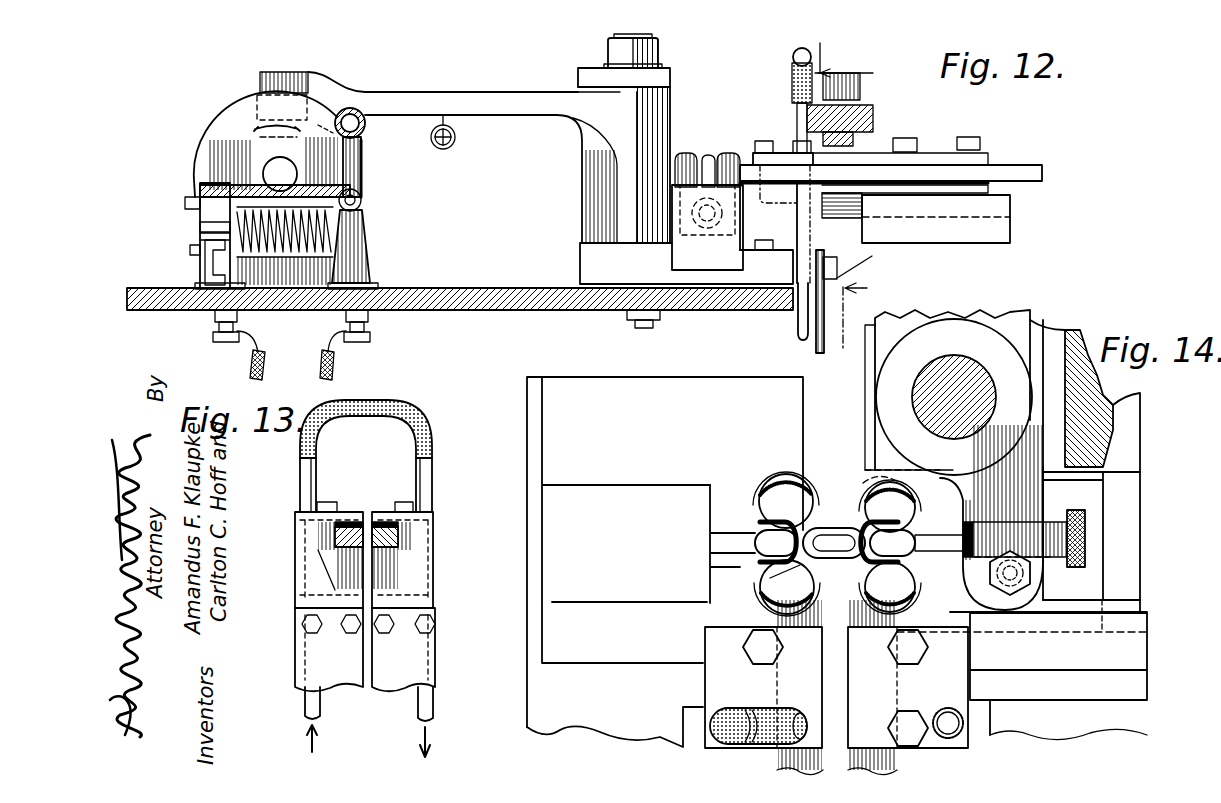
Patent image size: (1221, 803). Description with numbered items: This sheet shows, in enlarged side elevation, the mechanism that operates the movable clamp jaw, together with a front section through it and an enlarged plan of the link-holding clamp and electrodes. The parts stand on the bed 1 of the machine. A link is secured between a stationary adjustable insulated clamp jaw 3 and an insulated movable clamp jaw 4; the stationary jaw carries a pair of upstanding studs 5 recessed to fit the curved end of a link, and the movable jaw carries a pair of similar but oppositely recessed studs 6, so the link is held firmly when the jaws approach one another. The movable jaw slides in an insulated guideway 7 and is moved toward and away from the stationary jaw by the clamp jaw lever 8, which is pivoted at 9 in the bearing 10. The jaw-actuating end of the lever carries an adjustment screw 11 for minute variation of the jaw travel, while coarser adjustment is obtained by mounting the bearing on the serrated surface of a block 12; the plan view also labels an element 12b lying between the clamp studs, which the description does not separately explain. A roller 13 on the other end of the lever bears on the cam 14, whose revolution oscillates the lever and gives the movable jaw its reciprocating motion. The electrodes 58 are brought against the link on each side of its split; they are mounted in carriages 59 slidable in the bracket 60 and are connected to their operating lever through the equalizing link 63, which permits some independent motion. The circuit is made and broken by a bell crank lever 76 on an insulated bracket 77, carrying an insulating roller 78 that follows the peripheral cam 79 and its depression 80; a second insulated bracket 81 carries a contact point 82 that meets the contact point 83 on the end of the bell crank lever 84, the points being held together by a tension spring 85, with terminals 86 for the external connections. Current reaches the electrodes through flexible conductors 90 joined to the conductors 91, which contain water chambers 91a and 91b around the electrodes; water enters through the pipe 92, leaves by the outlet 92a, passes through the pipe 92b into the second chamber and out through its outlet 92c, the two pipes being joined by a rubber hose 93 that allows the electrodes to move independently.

In FIG. 12, the bed 1 is at (546, 306).
In FIG. 14, the bed 1 is at (610, 730).
In FIG. 14, the stationary adjustable insulated clamp jaw 3 is at (740, 495).
In FIG. 12, the insulated movable clamp jaw 4 is at (690, 240).
In FIG. 14, the insulated movable clamp jaw 4 is at (860, 483).
In FIG. 14, the upstanding studs 5 is at (780, 488).
In FIG. 12, the studs 6 is at (685, 153).
In FIG. 14, the studs 6 is at (897, 504).
In FIG. 12, the insulated guideway 7 is at (722, 262).
In FIG. 14, the insulated guideway 7 is at (1082, 583).
In FIG. 12, the clamp jaw lever 8 is at (540, 94).
In FIG. 14, the clamp jaw lever 8 is at (1000, 322).
In FIG. 12, the pivot 9 is at (640, 36).
In FIG. 14, the pivot 9 is at (960, 360).
In FIG. 12, the bearing 10 is at (668, 68).
In FIG. 14, the bearing 10 is at (1052, 330).
In FIG. 12, the adjustment screw 11 is at (690, 216).
In FIG. 14, the adjustment screw 11 is at (1085, 535).
In FIG. 12, the block 12 is at (668, 263).
In FIG. 14, the block 12 is at (1100, 489).
In FIG. 12, the chain guide clip 12b is at (705, 155).
In FIG. 14, the chain guide clip 12b is at (832, 525).
In FIG. 12, the roller 13 is at (262, 95).
In FIG. 12, the cam 14 is at (218, 122).
In FIG. 12, the electrodes 58 is at (745, 163).
In FIG. 14, the electrodes 58 is at (786, 579).
In FIG. 13, the electrodes 58 is at (383, 527).
In FIG. 12, the carriages 59 is at (990, 158).
In FIG. 12, the bracket 60 is at (1010, 224).
In FIG. 12, the equalizing link 63 is at (875, 117).
In FIG. 12, the bell crank lever 76 is at (362, 146).
In FIG. 12, the insulated bracket 77 is at (362, 265).
In FIG. 12, the roller 78 is at (362, 115).
In FIG. 12, the peripheral cam 79 is at (318, 115).
In FIG. 12, the depression 80 is at (275, 167).
In FIG. 12, the insulated bracket 81 is at (206, 273).
In FIG. 12, the contact point 82 is at (215, 236).
In FIG. 12, the contact point 83 is at (200, 228).
In FIG. 12, the bell crank lever 84 is at (263, 182).
In FIG. 12, the tension spring 85 is at (300, 262).
In FIG. 12, the terminals 86 is at (218, 334).
In FIG. 12, the flexible conductors 90 is at (816, 345).
In FIG. 13, the flexible conductors 90 is at (330, 650).
In FIG. 12, the conductors 91 is at (778, 152).
In FIG. 14, the conductors 91 is at (836, 687).
In FIG. 13, the conductors 91 is at (297, 567).
In FIG. 13, the chamber 91a is at (305, 598).
In FIG. 13, the chamber 91b is at (430, 596).
In FIG. 12, the pipe 92 is at (797, 322).
In FIG. 13, the pipe 92 is at (305, 705).
In FIG. 13, the outlet 92a is at (300, 480).
In FIG. 13, the pipe 92b is at (432, 478).
In FIG. 13, the outlet 92c is at (435, 708).
In FIG. 12, the rubber hose 93 is at (800, 48).
In FIG. 14, the rubber hose 93 is at (785, 713).
In FIG. 13, the rubber hose 93 is at (405, 408).